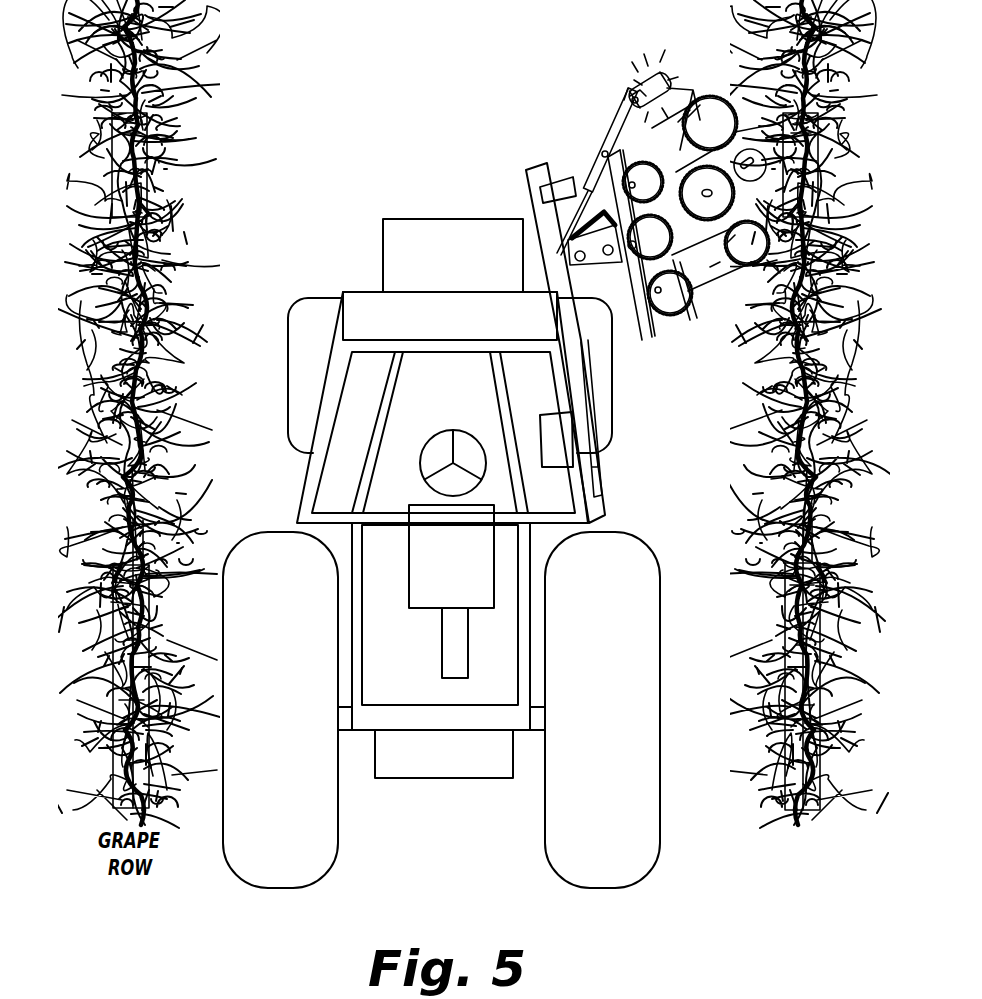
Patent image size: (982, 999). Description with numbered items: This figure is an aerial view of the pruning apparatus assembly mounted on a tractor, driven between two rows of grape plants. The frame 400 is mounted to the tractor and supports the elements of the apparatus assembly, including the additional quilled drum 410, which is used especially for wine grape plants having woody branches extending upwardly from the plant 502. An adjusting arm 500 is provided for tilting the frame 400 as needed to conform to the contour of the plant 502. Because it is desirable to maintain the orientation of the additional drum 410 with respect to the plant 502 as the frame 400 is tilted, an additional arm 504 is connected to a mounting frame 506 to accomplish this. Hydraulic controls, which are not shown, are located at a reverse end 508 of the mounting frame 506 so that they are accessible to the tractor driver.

The frame 400 is at (623, 320).
The additional quilled drum 410 is at (646, 58).
The adjusting arm 500 is at (577, 144).
The plant 502 is at (735, 364).
The additional arm 504 is at (540, 216).
The mounting frame 506 is at (585, 385).
The reverse end 508 is at (606, 468).